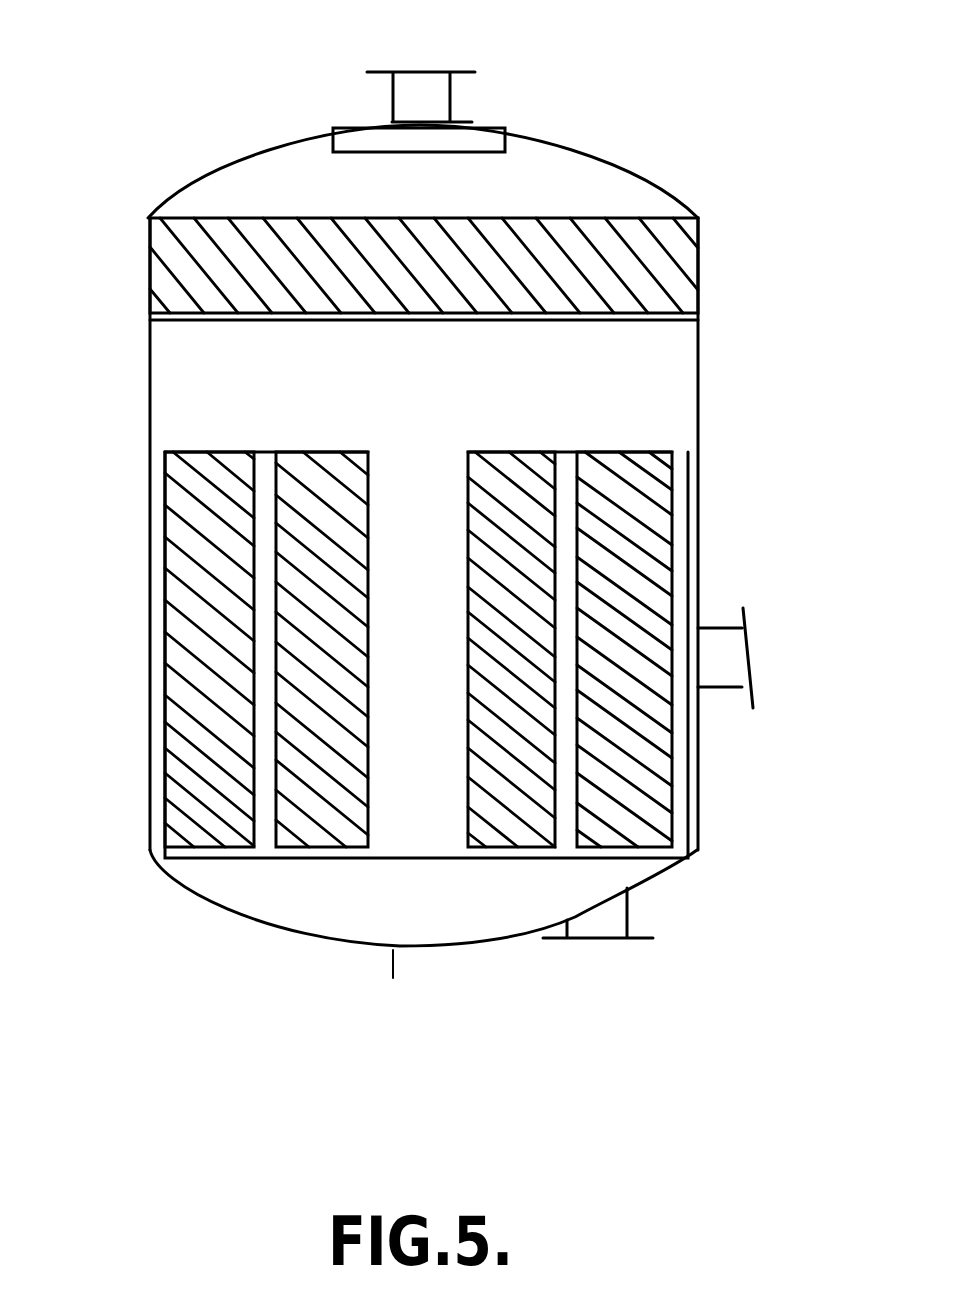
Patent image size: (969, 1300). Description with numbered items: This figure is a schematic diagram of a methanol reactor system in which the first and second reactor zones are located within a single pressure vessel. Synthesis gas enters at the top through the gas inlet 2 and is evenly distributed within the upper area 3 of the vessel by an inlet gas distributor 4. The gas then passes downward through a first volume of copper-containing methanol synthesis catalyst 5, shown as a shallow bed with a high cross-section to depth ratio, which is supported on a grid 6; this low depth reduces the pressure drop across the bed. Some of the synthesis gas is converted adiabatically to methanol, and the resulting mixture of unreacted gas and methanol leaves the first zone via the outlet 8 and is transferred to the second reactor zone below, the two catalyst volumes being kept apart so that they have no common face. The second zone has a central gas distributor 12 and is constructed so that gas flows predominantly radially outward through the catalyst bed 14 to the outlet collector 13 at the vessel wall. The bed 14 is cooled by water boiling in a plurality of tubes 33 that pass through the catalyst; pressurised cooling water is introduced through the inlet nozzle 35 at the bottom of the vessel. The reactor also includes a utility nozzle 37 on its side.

The gas inlet 2 is at (418, 63).
The upper area 3 is at (607, 193).
The inlet gas distributor 4 is at (468, 143).
The methanol synthesis catalyst bed 5 is at (667, 263).
The grid 6 is at (698, 321).
The outlet 8 is at (580, 342).
The utility nozzle 37 is at (600, 388).
The tubes 33 is at (565, 463).
The central gas distributor 12 is at (407, 460).
The catalyst bed 14 is at (632, 773).
The outlet collector 13 is at (730, 655).
The inlet nozzle 35 is at (598, 923).